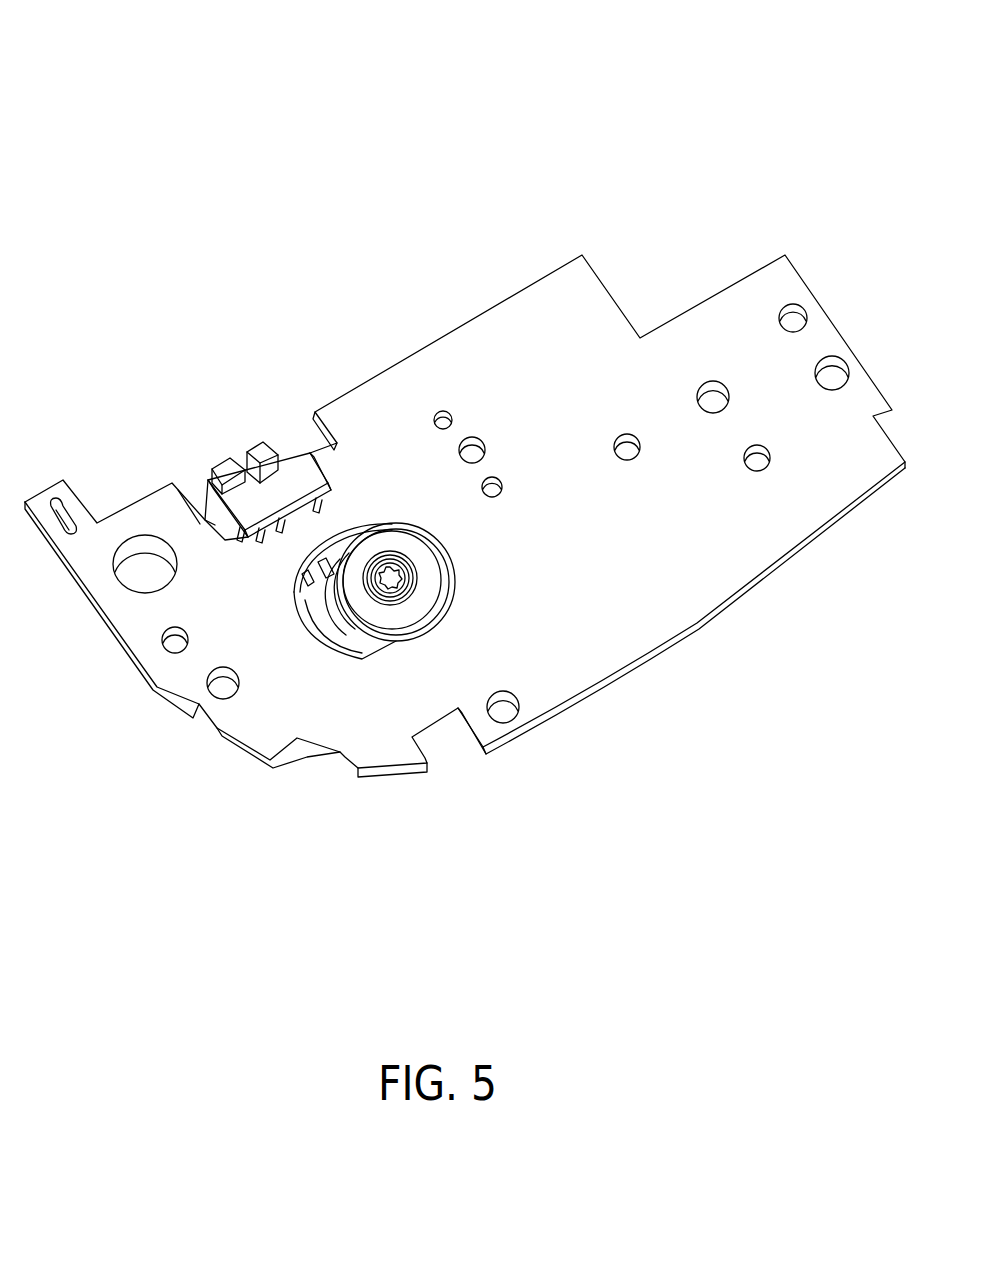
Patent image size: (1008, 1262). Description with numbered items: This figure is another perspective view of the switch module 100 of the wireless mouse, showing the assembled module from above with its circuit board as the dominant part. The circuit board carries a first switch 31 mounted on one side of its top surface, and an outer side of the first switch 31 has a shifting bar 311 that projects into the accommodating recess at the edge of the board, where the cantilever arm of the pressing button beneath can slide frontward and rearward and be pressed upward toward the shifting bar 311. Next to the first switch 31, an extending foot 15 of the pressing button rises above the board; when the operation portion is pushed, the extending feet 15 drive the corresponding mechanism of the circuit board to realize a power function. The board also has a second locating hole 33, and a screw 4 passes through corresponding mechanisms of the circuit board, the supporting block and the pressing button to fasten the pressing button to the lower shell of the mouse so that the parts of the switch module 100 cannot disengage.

The switch module 100 is at (90, 42).
The extending foot 15 is at (259, 442).
The first switch 31 is at (208, 478).
The shifting bar 311 is at (236, 462).
The second locating hole 33 is at (320, 630).
The screw 4 is at (385, 618).